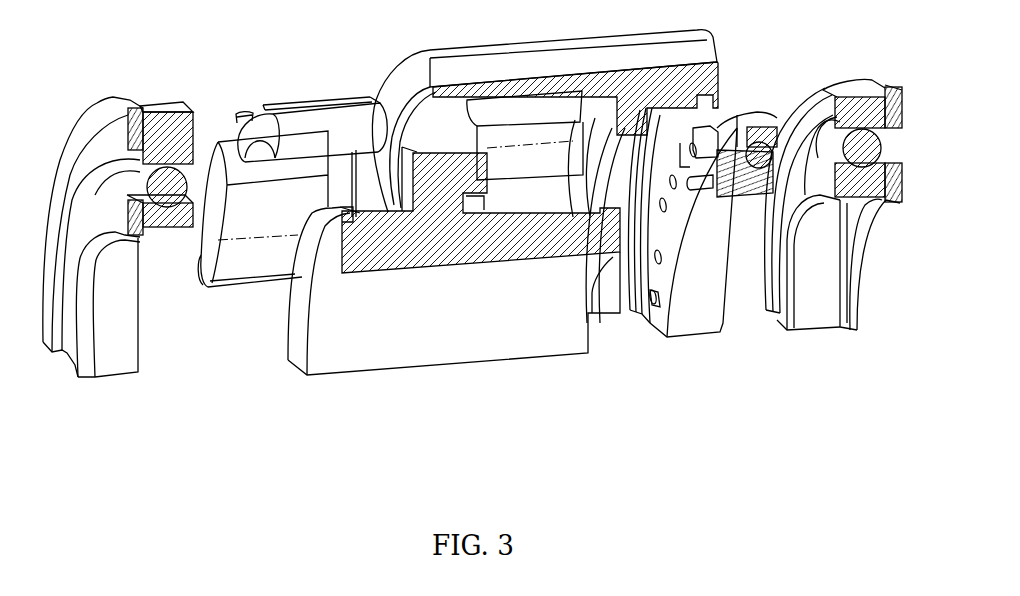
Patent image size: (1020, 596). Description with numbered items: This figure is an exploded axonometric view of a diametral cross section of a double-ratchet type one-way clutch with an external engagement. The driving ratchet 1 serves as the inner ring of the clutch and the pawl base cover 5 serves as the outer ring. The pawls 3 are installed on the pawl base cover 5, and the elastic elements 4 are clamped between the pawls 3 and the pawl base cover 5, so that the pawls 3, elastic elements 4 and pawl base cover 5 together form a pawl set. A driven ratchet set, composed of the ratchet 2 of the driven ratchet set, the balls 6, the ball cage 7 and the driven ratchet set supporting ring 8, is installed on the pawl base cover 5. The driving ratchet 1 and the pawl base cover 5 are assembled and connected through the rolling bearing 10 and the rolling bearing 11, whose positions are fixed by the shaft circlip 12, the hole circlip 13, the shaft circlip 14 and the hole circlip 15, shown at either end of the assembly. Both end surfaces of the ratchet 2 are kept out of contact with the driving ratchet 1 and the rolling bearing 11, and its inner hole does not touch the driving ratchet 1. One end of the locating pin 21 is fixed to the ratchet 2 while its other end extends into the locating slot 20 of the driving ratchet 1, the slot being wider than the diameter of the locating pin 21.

The driving ratchet 1 is at (305, 285).
The ratchet of the driven ratchet set 2 is at (712, 272).
The pawls 3 is at (308, 130).
The elastic elements 4 is at (237, 115).
The pawl base cover 5 is at (403, 72).
The balls 6 is at (770, 125).
The ball cage 7 is at (745, 126).
The driven ratchet set supporting ring 8 is at (781, 130).
The rolling bearing 10 is at (167, 108).
The rolling bearing 11 is at (807, 252).
The shaft circlip 12 is at (104, 230).
The hole circlip 13 is at (102, 127).
The shaft circlip 14 is at (850, 282).
The hole circlip 15 is at (882, 72).
The locating slot 20 is at (468, 200).
The locating pin 21 is at (703, 183).